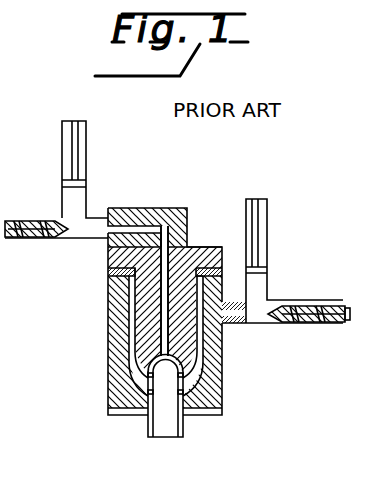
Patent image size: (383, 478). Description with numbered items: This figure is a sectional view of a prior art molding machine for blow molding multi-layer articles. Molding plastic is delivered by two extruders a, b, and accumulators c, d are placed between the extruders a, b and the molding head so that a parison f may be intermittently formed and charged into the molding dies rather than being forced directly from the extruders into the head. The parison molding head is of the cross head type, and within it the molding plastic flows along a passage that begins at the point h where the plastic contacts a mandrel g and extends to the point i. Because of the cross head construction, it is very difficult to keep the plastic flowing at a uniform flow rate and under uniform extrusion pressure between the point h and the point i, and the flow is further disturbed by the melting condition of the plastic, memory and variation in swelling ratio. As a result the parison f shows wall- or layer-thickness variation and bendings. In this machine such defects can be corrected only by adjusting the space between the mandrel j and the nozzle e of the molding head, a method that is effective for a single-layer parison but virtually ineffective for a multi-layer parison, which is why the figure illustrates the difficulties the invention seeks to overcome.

The extruder a is at (317, 330).
The extruder b is at (25, 240).
The accumulator c is at (262, 287).
The accumulator d is at (85, 193).
The nozzle e is at (222, 403).
The parison f is at (184, 428).
The mandrel g is at (205, 368).
The point h is at (205, 349).
The point i is at (150, 344).
The mandrel j is at (160, 402).